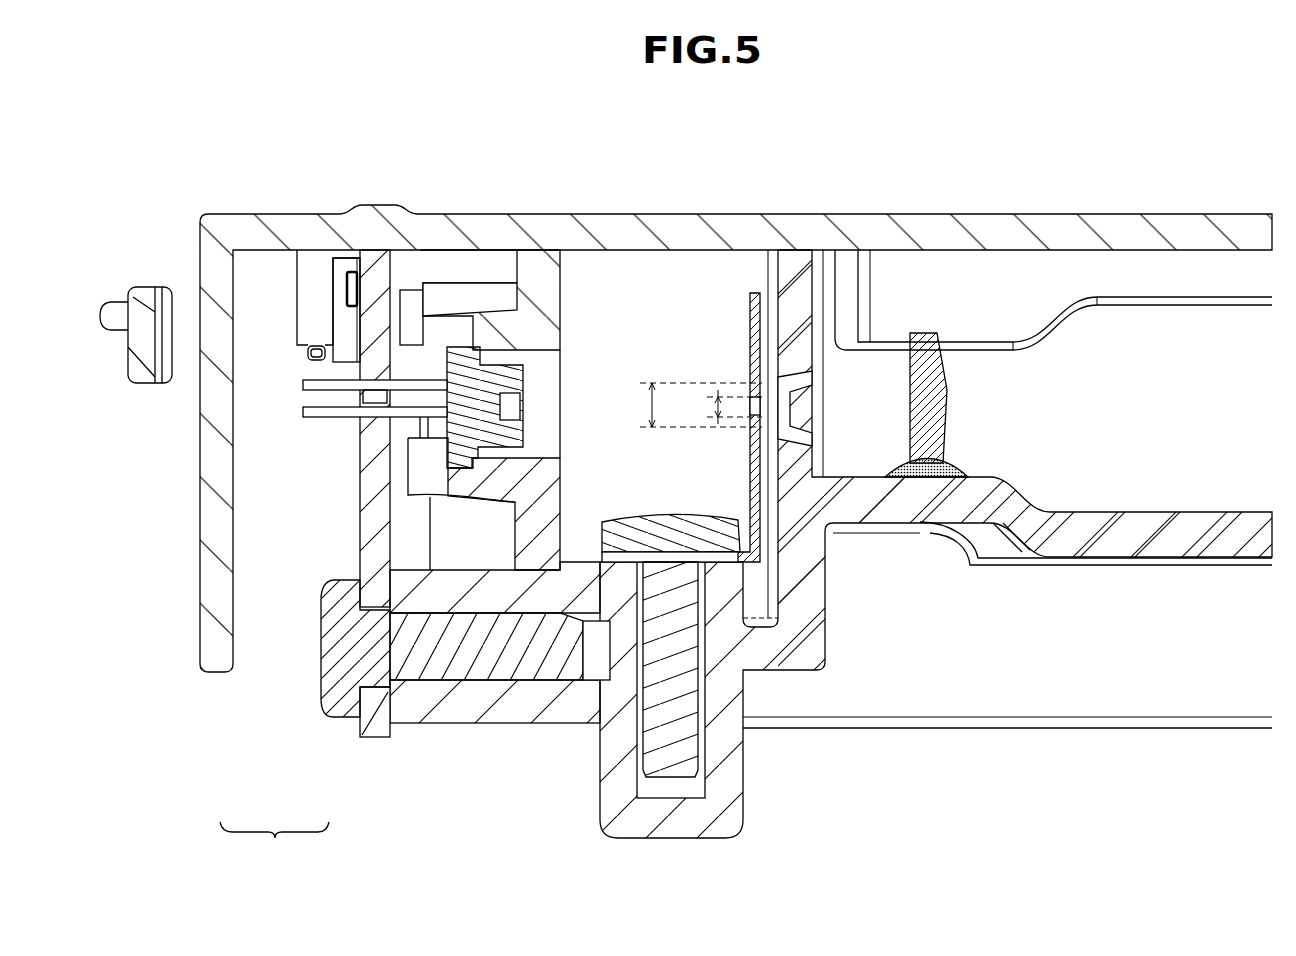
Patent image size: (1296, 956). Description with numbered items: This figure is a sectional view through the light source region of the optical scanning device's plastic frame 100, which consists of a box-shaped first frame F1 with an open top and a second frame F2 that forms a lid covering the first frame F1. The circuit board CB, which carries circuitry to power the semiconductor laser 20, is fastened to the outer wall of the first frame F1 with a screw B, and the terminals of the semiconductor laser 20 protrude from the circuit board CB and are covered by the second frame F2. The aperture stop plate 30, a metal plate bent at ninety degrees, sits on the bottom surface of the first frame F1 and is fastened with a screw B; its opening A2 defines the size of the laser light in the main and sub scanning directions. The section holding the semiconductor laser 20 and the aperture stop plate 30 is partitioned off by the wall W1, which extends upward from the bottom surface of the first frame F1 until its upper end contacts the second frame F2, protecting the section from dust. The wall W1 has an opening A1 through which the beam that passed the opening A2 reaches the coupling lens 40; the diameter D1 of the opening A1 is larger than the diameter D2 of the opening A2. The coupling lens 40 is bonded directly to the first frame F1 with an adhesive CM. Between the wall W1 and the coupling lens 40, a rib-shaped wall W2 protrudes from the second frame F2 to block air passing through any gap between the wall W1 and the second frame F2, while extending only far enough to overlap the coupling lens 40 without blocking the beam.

The semiconductor laser 20 is at (527, 380).
The aperture stop plate 30 is at (750, 304).
The coupling lens 40 is at (943, 393).
The frame 100 is at (274, 845).
The circuit board CB is at (370, 460).
The screw B is at (330, 587).
The wall W1 is at (797, 275).
The wall W2 is at (852, 285).
The opening A1 is at (790, 417).
The opening A2 is at (752, 400).
The diameter of opening A1 D1 is at (685, 405).
The diameter of opening A2 D2 is at (719, 407).
The adhesive CM is at (962, 464).
The first frame F1 is at (530, 727).
The second frame F2 is at (200, 641).